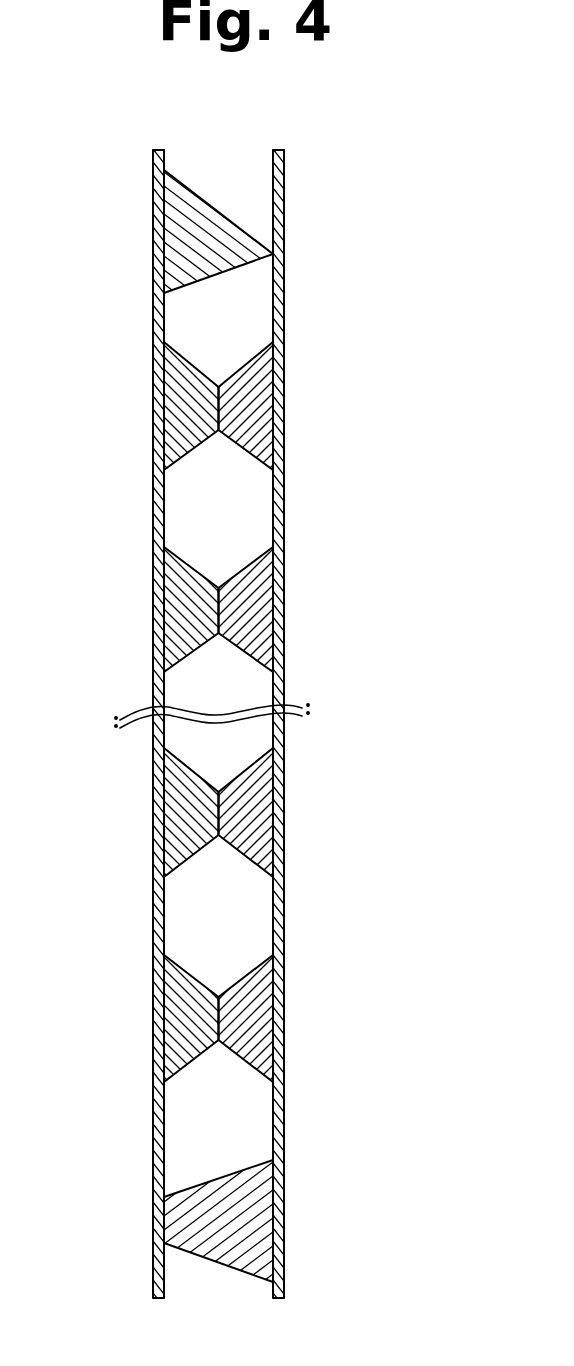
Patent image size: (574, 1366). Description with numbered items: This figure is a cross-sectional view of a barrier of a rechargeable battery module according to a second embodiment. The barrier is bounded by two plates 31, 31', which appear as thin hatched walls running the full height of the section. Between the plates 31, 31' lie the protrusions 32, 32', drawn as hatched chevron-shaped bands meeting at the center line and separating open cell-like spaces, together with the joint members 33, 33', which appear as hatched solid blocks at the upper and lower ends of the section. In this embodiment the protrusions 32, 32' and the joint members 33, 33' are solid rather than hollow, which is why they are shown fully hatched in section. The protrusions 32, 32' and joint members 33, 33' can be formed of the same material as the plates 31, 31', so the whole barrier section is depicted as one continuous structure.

The plate 31 is at (128, 721).
The plate 31' is at (311, 721).
The protrusion 32 is at (156, 708).
The protrusion 32' is at (283, 708).
The joint member 33 is at (257, 227).
The joint member 33' is at (218, 1217).